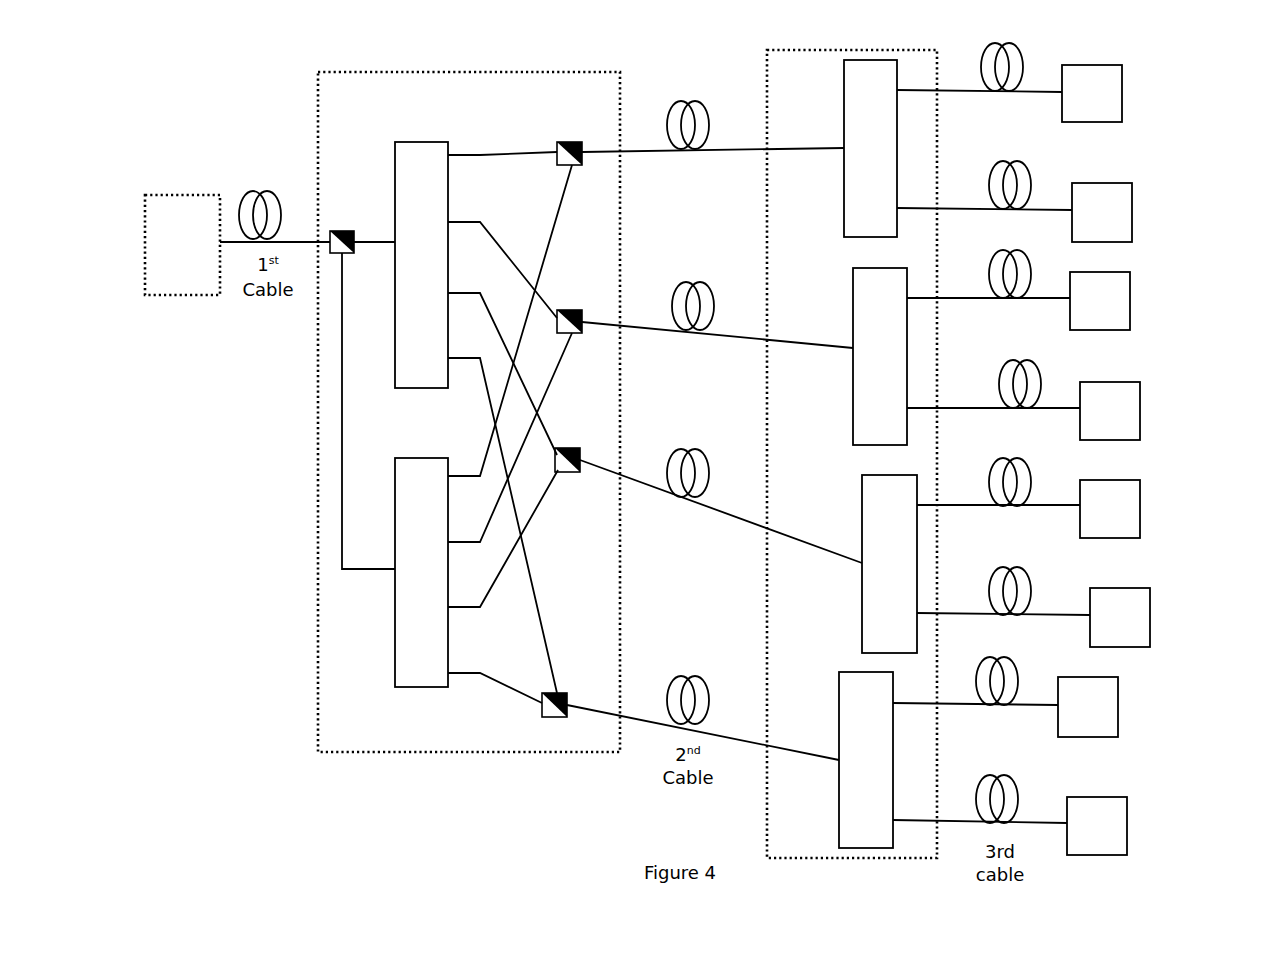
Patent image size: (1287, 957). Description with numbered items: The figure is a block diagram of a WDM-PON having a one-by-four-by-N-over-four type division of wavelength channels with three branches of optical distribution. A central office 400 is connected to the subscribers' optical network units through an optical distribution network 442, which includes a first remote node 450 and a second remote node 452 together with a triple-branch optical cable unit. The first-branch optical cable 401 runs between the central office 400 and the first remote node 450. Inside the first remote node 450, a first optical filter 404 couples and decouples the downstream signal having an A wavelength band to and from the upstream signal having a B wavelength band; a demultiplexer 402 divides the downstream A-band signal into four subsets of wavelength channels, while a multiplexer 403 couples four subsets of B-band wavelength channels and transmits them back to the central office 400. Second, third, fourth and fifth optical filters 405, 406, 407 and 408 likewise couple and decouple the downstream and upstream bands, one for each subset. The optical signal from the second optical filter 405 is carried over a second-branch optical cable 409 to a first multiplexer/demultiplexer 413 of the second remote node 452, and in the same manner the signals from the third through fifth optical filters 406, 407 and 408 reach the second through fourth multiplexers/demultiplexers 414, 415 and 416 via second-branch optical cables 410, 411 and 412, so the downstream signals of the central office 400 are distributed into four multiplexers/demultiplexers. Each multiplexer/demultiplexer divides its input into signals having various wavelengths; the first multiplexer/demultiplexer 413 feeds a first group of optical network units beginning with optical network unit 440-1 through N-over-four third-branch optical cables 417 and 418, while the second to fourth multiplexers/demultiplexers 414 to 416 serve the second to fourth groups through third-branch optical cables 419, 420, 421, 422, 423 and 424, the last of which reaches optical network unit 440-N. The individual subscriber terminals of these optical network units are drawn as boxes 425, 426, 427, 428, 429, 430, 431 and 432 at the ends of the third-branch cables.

The central office 400 is at (182, 267).
The first cable fiber 401 is at (268, 185).
The demultiplexer 402 is at (410, 142).
The multiplexer 403 is at (395, 687).
The first optical filter 404 is at (348, 231).
The second optical filter 405 is at (557, 143).
The third optical filter 406 is at (577, 310).
The fourth optical filter 407 is at (577, 448).
The fifth optical filter 408 is at (565, 693).
The second-branch optical cable 409 is at (706, 112).
The second-branch optical cable 410 is at (703, 284).
The second-branch optical cable 411 is at (706, 452).
The second-branch optical cable 412 is at (700, 678).
The first multiplexer/demultiplexer 413 is at (844, 125).
The second multiplexer/demultiplexer 414 is at (853, 315).
The third multiplexer/demultiplexer 415 is at (862, 500).
The fourth multiplexer/demultiplexer 416 is at (839, 732).
The third-branch optical cable 417 is at (985, 95).
The third-branch optical cable 418 is at (995, 208).
The third-branch optical cable 419 is at (995, 297).
The third-branch optical cable 420 is at (1003, 408).
The third-branch optical cable 421 is at (995, 508).
The third-branch optical cable 422 is at (990, 600).
The third-branch optical cable 423 is at (985, 708).
The third-branch optical cable 424 is at (1005, 775).
The subscriber terminal 425 is at (1122, 105).
The subscriber terminal 426 is at (1132, 222).
The subscriber terminal 427 is at (1130, 310).
The subscriber terminal 428 is at (1140, 410).
The subscriber terminal 429 is at (1140, 510).
The subscriber terminal 430 is at (1150, 625).
The subscriber terminal 431 is at (1118, 718).
The subscriber terminal 432 is at (1127, 828).
The optical network unit 440-1 is at (1204, 111).
The optical network unit 440-N is at (1195, 814).
The optical distribution network 442 is at (538, 795).
The first remote node 450 is at (469, 431).
The second remote node 452 is at (852, 470).